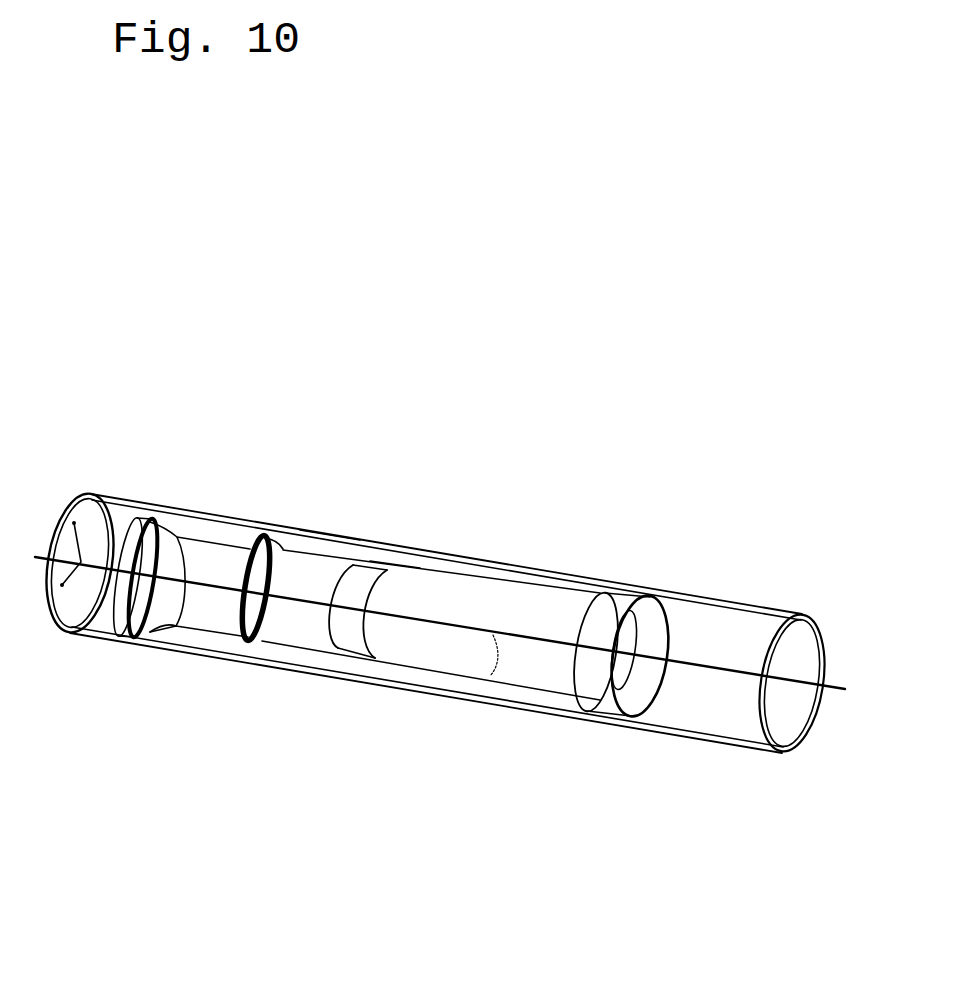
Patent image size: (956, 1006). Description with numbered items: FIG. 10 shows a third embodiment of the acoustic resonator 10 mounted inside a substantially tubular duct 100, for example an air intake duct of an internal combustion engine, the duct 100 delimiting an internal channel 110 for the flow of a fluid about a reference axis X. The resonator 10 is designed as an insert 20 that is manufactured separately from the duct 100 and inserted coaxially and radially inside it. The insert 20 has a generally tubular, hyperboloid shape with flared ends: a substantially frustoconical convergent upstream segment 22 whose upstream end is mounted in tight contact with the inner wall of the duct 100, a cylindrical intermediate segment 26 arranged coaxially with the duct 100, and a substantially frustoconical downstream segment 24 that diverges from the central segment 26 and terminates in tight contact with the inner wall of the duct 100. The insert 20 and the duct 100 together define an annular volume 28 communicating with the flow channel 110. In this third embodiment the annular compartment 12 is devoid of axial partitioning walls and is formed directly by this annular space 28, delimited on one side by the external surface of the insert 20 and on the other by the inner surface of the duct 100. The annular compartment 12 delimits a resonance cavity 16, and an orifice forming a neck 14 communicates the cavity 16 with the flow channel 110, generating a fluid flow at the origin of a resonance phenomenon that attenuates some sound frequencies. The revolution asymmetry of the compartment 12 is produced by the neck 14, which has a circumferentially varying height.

The duct 100 is at (132, 500).
The internal channel 110 is at (728, 640).
The resonator 10 is at (187, 632).
The annular compartment 12 is at (242, 645).
The orifice forming a neck 14 is at (272, 533).
The resonance cavity 16 is at (332, 555).
The insert 20 is at (433, 570).
The upstream segment 22 is at (170, 538).
The downstream segment 24 is at (637, 680).
The cylindrical intermediate segment 26 is at (315, 635).
The annular volume 28 is at (380, 562).
The reference axis X is at (492, 635).